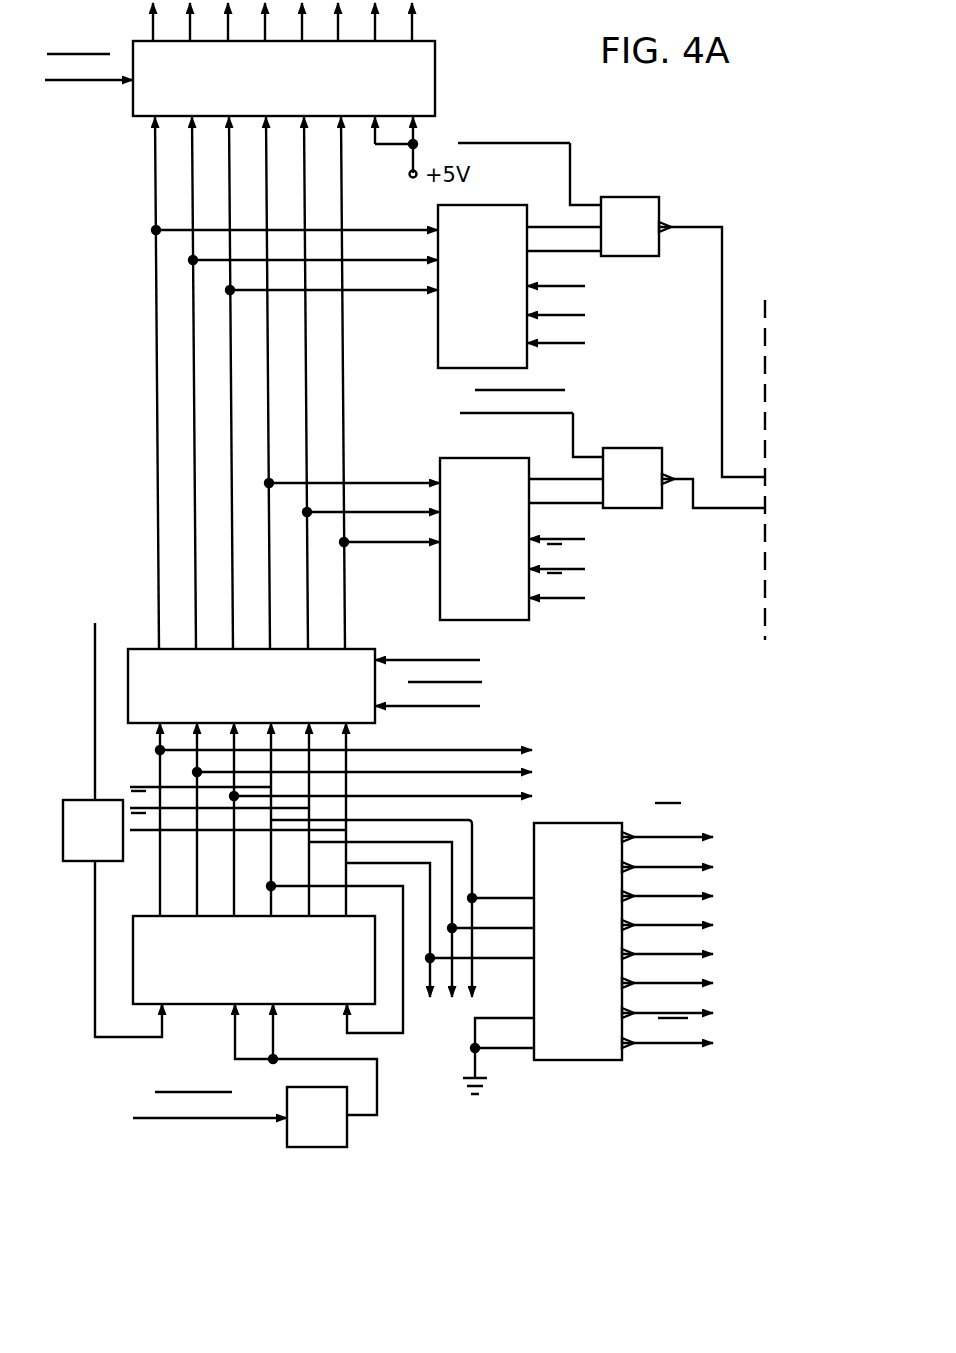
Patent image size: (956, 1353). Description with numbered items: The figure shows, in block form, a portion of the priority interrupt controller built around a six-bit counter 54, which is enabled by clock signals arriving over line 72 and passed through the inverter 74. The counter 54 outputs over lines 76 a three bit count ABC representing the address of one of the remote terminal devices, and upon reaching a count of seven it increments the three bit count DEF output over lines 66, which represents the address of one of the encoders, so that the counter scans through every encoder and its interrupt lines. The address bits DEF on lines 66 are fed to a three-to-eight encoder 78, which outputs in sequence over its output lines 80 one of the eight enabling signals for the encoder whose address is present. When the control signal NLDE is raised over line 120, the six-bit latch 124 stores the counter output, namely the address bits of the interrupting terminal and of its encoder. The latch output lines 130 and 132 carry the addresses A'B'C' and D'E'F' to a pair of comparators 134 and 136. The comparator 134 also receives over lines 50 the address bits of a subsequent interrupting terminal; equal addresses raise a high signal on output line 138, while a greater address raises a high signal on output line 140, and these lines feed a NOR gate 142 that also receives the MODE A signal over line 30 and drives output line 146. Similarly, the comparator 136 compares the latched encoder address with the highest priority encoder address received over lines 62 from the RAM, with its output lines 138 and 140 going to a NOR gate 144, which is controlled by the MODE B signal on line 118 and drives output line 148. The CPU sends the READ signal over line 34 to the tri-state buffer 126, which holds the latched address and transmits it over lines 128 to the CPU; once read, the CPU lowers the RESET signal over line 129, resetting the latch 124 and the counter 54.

The tri-state buffer 126 is at (435, 58).
The output lines 128 is at (413, 17).
The READ line 34 is at (105, 83).
The MODE A line 30 is at (570, 150).
The comparator output line 140 is at (568, 222).
The comparator 134 is at (445, 212).
The comparator output line 138 is at (585, 253).
The NOR gate 142 is at (628, 200).
The output line of NOR gate 146 is at (722, 305).
The address lines 50 is at (583, 283).
The latch output lines 130 is at (232, 416).
The latch output lines 132 is at (268, 388).
The MODE B line 118 is at (575, 418).
The comparator 136 is at (470, 460).
The NOR gate 144 is at (632, 452).
The output line of NOR gate 148 is at (747, 510).
The RAM output lines 62 is at (583, 535).
The 6-bit latch 124 is at (140, 648).
The NLDE line 120 is at (478, 660).
The RESET line 129 is at (478, 707).
The clock line 72 is at (93, 755).
The inverter 74 is at (75, 852).
The counter output lines 76 is at (360, 796).
The counter output lines 66 is at (452, 846).
The counter 54 is at (196, 1005).
The 3-8 encoder 78 is at (578, 826).
The encoder output lines 80 is at (690, 1046).